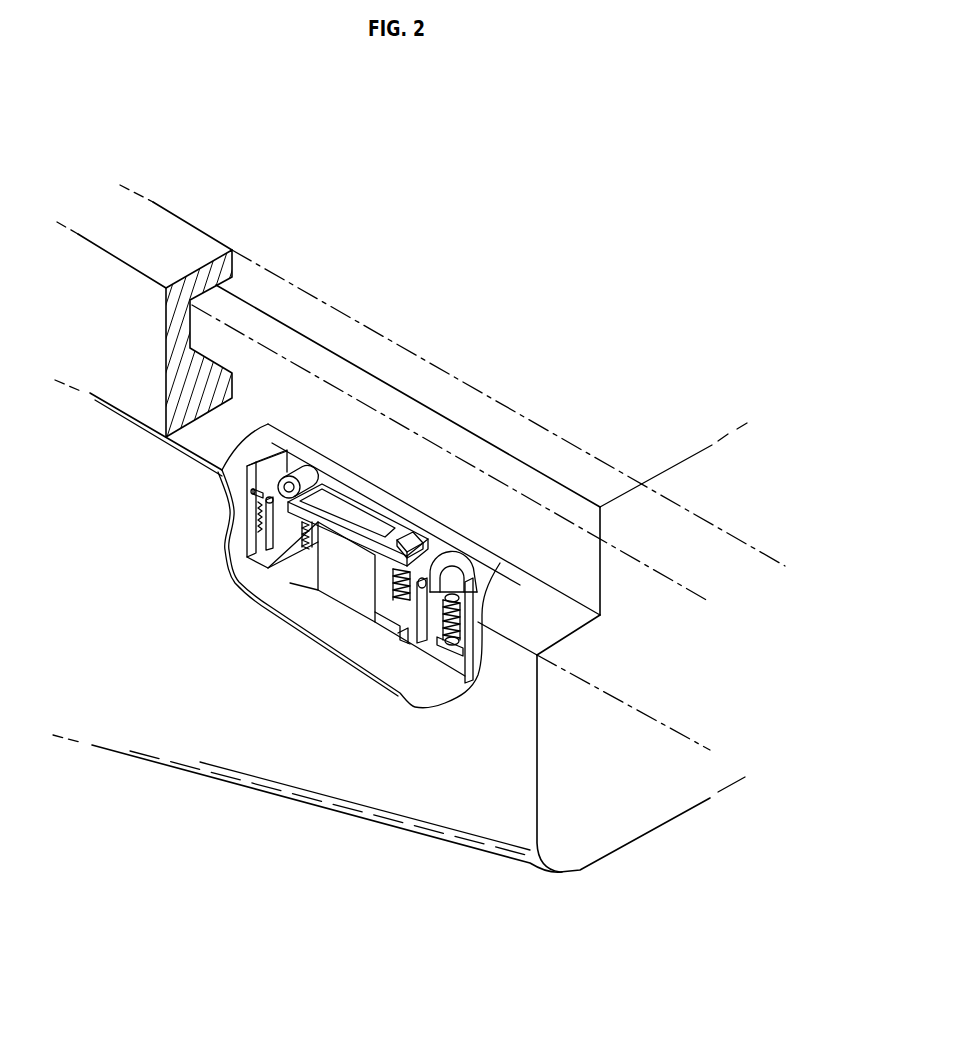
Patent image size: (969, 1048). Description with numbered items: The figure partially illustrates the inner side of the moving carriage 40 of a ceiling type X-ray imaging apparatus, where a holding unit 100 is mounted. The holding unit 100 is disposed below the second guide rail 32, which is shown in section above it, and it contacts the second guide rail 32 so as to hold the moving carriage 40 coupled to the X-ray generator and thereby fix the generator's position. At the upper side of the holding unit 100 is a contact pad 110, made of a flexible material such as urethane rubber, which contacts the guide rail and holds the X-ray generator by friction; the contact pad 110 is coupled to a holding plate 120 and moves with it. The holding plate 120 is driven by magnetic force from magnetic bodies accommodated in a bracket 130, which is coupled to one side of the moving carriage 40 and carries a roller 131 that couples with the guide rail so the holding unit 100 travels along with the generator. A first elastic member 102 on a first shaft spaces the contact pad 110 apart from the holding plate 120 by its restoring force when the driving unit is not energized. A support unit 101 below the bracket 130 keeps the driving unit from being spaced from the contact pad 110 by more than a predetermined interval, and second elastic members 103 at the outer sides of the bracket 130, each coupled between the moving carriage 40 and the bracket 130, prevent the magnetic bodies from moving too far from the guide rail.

The second guide rail 32 is at (190, 243).
The moving carriage 40 is at (477, 800).
The holding unit 100 is at (232, 563).
The support unit 101 is at (337, 597).
The first elastic member 102 is at (293, 537).
The second elastic member 103 is at (435, 625).
The contact pad 110 is at (360, 513).
The holding plate 120 is at (424, 554).
The bracket 130 is at (398, 612).
The roller 131 is at (457, 565).